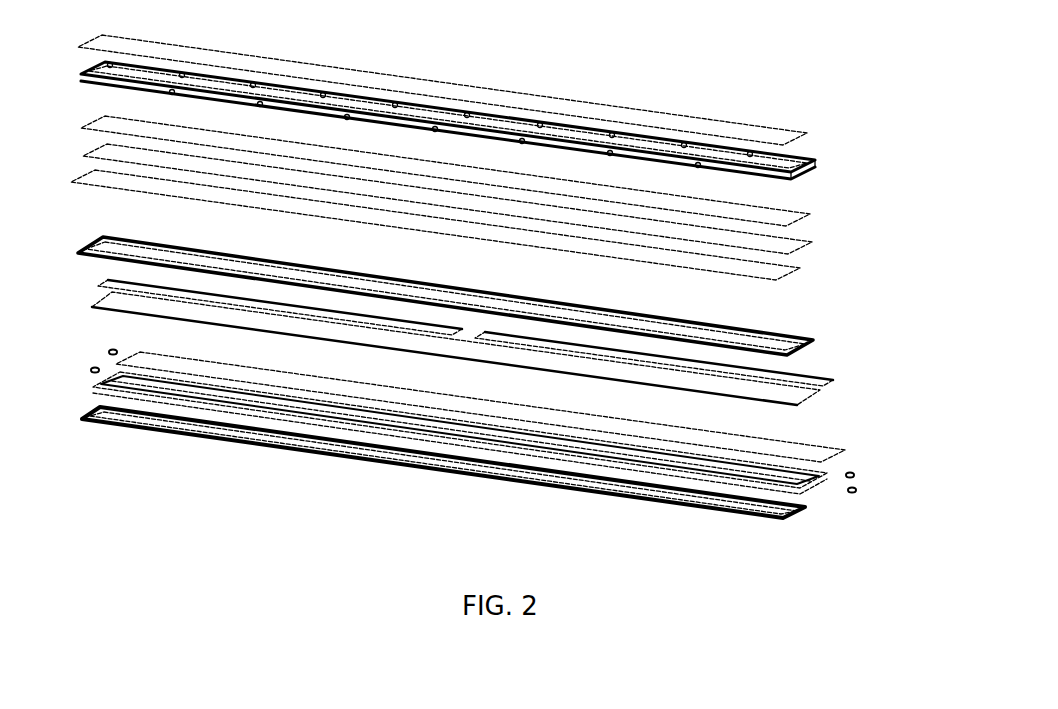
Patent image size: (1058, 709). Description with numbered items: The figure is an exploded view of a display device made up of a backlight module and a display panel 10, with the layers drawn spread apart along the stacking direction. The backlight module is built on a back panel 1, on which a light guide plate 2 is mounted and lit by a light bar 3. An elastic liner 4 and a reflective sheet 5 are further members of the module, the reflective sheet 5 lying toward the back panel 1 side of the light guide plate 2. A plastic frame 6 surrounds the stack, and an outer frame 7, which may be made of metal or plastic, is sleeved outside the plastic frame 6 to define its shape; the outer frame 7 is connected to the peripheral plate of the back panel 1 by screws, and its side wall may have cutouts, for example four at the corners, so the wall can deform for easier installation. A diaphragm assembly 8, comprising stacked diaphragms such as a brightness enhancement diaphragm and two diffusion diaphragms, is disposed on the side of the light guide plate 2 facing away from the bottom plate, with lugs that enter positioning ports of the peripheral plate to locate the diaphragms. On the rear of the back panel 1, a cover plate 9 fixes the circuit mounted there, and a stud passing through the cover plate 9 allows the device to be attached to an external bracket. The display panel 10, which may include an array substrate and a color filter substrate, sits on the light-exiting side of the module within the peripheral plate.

The back panel 1 is at (805, 489).
The light guide plate 2 is at (797, 397).
The light bar 3 is at (108, 280).
The elastic liner 4 is at (856, 491).
The reflective sheet 5 is at (821, 452).
The plastic frame 6 is at (813, 340).
The outer frame 7 is at (815, 167).
The diaphragm assembly 8 is at (797, 272).
The cover plate 9 is at (708, 508).
The display panel 10 is at (785, 133).